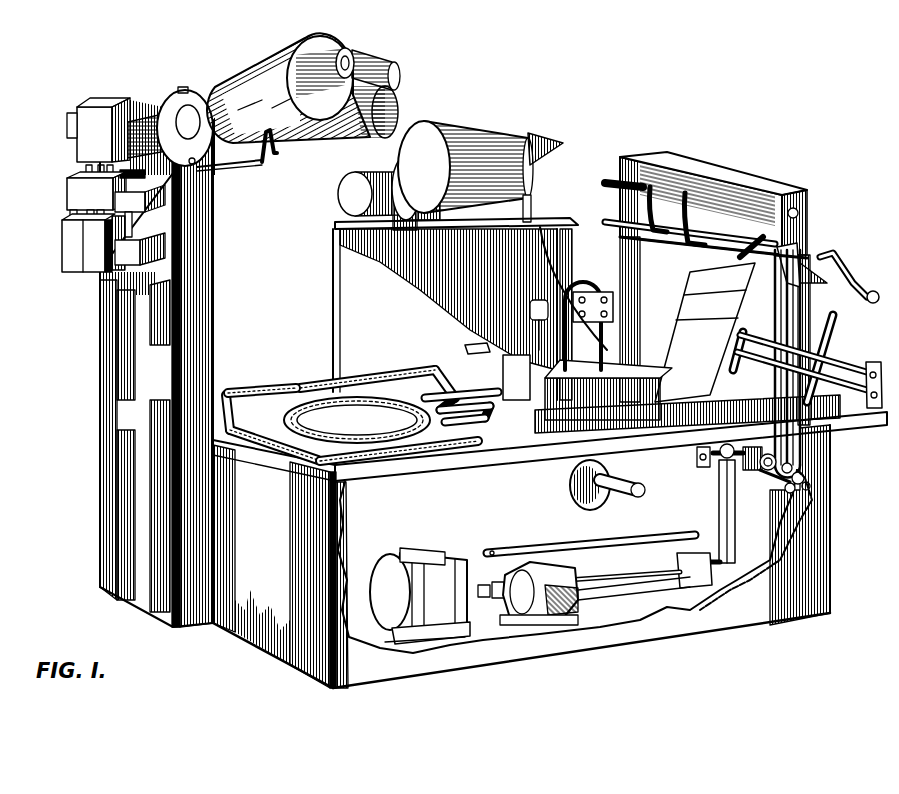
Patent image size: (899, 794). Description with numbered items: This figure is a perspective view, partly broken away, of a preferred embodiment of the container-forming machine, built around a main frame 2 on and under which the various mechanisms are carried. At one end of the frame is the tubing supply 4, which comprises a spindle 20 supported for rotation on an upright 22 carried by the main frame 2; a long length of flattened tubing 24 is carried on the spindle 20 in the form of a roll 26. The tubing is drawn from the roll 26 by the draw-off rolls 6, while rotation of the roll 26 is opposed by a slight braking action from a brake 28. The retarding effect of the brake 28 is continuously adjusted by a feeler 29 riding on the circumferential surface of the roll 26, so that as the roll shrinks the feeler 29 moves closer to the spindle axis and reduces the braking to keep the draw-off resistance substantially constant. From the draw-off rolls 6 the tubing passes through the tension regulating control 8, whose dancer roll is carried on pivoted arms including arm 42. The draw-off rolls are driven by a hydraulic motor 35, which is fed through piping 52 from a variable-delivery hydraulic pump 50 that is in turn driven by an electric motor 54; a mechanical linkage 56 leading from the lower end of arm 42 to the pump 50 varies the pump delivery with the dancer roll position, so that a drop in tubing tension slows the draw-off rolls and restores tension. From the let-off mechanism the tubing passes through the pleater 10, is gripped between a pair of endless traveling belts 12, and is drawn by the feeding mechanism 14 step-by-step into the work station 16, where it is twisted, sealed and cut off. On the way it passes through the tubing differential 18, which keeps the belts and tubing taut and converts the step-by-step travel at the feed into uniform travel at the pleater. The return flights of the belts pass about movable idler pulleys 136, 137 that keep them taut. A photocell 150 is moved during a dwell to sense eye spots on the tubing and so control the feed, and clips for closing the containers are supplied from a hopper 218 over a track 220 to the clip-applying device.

The main frame 2 is at (247, 622).
The tubing supply 4 is at (284, 40).
The draw-off rolls 6 is at (766, 172).
The tension regulating control 8 is at (842, 350).
The pleater 10 is at (690, 405).
The endless traveling belts 12 is at (374, 465).
The feeding mechanism 14 is at (524, 338).
The work station 16 is at (596, 283).
The tubing differential 18 is at (214, 432).
The spindle 20 is at (350, 56).
The upright 22 is at (115, 303).
The tubing 24 is at (381, 72).
The roll 26 is at (224, 82).
The brake 28 is at (183, 88).
The feeler 29 is at (279, 153).
The hydraulic motor 35 is at (713, 570).
The arm 42 is at (806, 490).
The variable-delivery hydraulic pump 50 is at (557, 614).
The piping 52 is at (690, 575).
The electric motor 54 is at (440, 640).
The mechanical linkage 56 is at (600, 545).
The movable idler pulley 136 is at (290, 386).
The movable idler pulley 137 is at (478, 385).
The photocell 150 is at (478, 345).
The hopper 218 is at (474, 127).
The track 220 is at (546, 247).